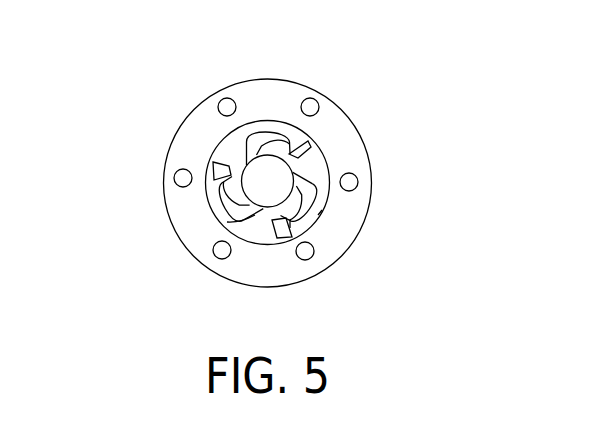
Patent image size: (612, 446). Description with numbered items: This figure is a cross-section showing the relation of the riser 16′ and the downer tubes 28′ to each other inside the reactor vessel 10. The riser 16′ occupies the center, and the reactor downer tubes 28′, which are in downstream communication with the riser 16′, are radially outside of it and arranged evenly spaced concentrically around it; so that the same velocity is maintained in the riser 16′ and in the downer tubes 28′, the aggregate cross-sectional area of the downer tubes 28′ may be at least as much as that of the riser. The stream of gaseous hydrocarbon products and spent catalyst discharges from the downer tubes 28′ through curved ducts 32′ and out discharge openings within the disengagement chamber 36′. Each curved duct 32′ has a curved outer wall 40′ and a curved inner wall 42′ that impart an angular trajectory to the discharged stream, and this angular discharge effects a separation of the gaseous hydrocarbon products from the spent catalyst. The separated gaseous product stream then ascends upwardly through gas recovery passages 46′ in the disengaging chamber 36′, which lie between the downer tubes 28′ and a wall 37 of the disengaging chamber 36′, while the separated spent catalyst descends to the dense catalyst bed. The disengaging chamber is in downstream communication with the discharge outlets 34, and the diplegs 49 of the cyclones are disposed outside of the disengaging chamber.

The reactor vessel 10 is at (331, 265).
The diplegs 49 is at (228, 98).
The discharge outlets 34 is at (219, 161).
The riser 16′ is at (282, 173).
The downer tubes 28′ is at (263, 137).
The gas recovery passages 46′ is at (239, 142).
The curved outer wall 40′ is at (303, 135).
The curved inner wall 42′ is at (262, 220).
The curved ducts 32′ is at (216, 170).
The disengagement chamber 36′ is at (240, 221).
The wall 37 is at (322, 210).